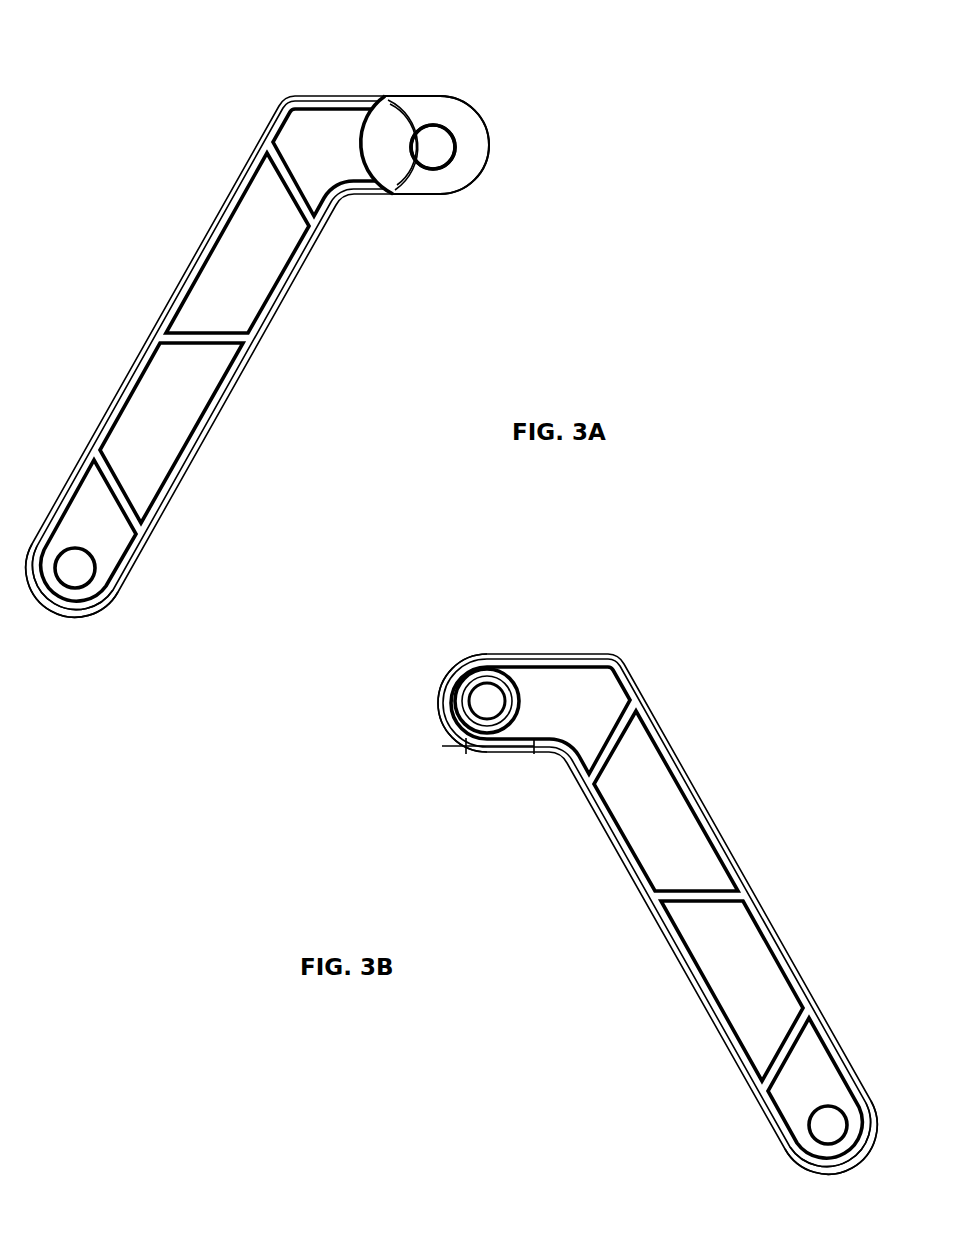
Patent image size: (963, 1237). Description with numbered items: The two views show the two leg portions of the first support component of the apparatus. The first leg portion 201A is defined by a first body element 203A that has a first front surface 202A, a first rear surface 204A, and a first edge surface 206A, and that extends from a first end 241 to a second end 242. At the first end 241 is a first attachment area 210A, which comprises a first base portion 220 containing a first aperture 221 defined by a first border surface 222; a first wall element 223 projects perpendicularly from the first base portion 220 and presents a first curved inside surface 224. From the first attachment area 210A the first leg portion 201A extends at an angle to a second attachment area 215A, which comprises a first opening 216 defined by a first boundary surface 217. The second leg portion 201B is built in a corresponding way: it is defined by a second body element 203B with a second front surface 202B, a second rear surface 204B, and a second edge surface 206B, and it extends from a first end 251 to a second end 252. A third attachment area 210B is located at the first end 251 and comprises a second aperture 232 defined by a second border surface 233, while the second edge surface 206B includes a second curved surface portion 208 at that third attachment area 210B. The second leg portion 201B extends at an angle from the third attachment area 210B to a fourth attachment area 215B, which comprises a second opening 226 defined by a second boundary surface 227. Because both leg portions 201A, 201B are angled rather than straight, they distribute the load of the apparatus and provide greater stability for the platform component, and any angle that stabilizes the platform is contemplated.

In FIG. 3A, the first leg portion 201A is at (170, 113).
In FIG. 3A, the first front surface 202A is at (153, 422).
In FIG. 3A, the first body element 203A is at (240, 290).
In FIG. 3A, the first rear surface 204A is at (252, 375).
In FIG. 3A, the first edge surface 206A is at (167, 307).
In FIG. 3A, the first attachment area 210A is at (490, 168).
In FIG. 3A, the second attachment area 215A is at (162, 561).
In FIG. 3A, the first opening 216 is at (73, 560).
In FIG. 3A, the first boundary surface 217 is at (98, 612).
In FIG. 3A, the first base portion 220 is at (470, 114).
In FIG. 3A, the first aperture 221 is at (428, 160).
In FIG. 3A, the first border surface 222 is at (432, 155).
In FIG. 3A, the first wall element 223 is at (386, 96).
In FIG. 3A, the first curved inside surface 224 is at (372, 131).
In FIG. 3A, the first end 241 is at (447, 183).
In FIG. 3A, the second end 242 is at (123, 590).
In FIG. 3B, the second leg portion 201B is at (728, 634).
In FIG. 3B, the second front surface 202B is at (655, 805).
In FIG. 3B, the second body element 203B is at (633, 760).
In FIG. 3B, the second rear surface 204B is at (632, 927).
In FIG. 3B, the second edge surface 206B is at (773, 922).
In FIG. 3B, the second curved surface portion 208 is at (437, 675).
In FIG. 3B, the third attachment area 210B is at (424, 683).
In FIG. 3B, the fourth attachment area 215B is at (765, 1137).
In FIG. 3B, the second opening 226 is at (830, 1127).
In FIG. 3B, the second boundary surface 227 is at (815, 1140).
In FIG. 3B, the second aperture 232 is at (484, 700).
In FIG. 3B, the second border surface 233 is at (508, 672).
In FIG. 3B, the first end 251 is at (460, 746).
In FIG. 3B, the second end 252 is at (853, 1128).